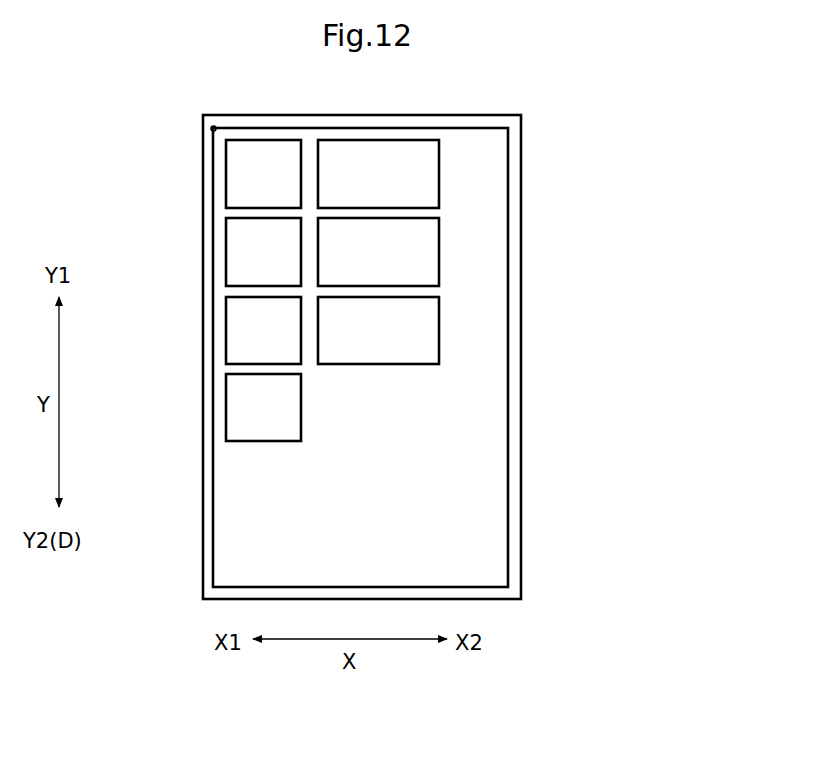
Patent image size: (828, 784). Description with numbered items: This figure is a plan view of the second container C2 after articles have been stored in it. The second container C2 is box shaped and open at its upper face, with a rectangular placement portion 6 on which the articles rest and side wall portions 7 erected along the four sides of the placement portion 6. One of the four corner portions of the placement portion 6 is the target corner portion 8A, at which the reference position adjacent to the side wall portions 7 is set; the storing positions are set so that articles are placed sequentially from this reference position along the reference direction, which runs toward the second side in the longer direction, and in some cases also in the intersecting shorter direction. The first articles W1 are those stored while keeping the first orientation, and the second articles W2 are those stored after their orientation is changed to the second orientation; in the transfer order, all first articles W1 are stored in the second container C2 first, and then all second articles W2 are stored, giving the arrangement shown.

The side wall portions 7 is at (455, 115).
The placement portion 6 is at (500, 327).
The target corner portion 8A is at (216, 127).
The first article W1 is at (410, 262).
The second article W2 is at (270, 182).
The second container C2 is at (583, 220).